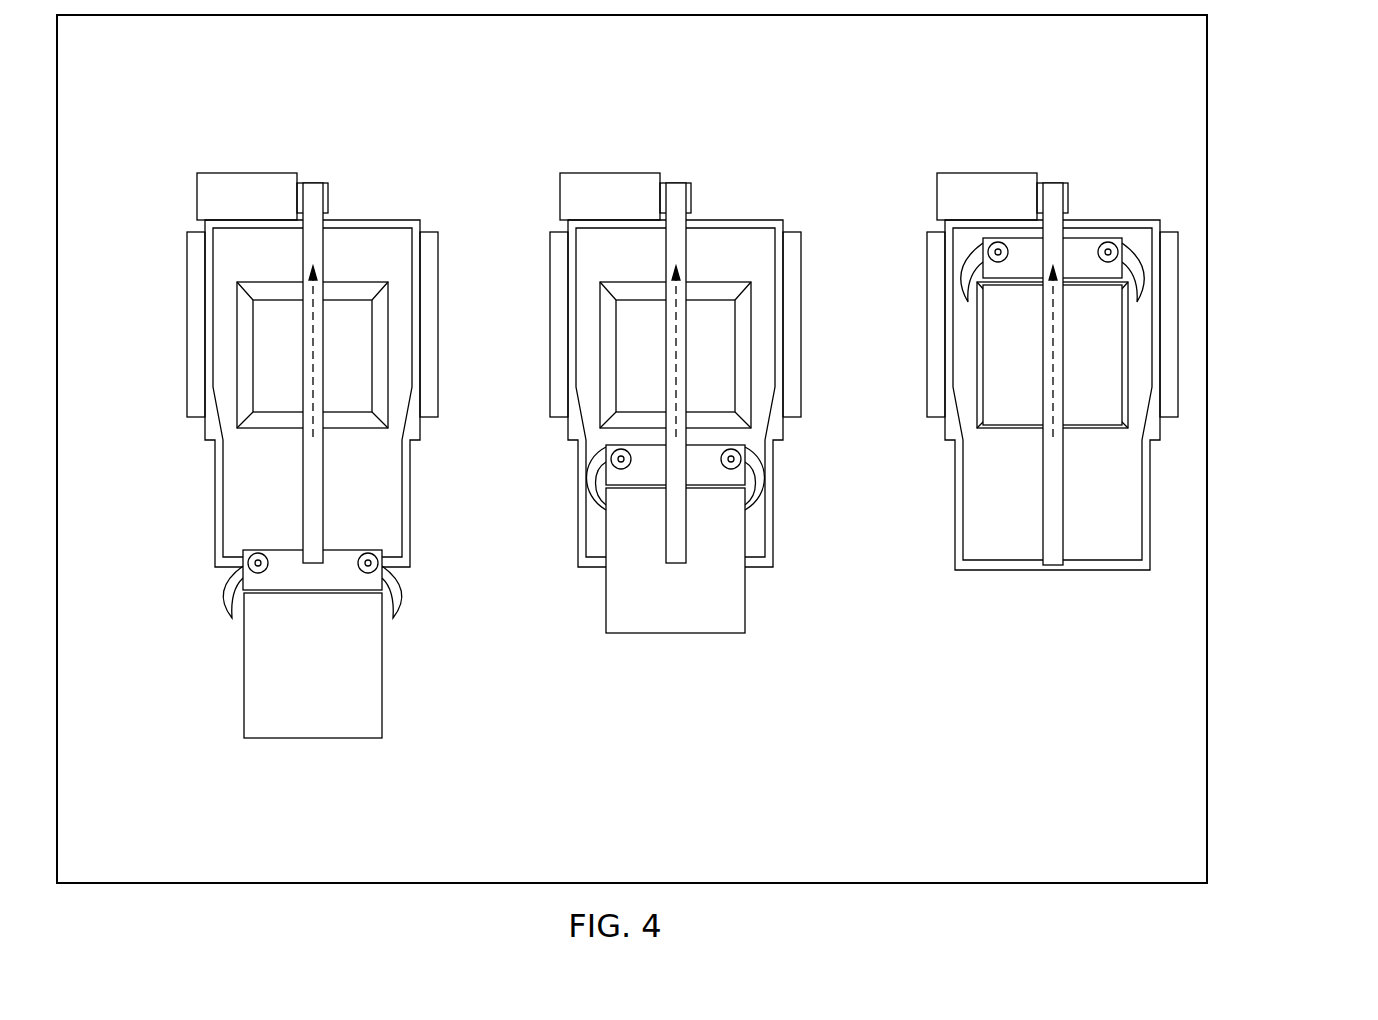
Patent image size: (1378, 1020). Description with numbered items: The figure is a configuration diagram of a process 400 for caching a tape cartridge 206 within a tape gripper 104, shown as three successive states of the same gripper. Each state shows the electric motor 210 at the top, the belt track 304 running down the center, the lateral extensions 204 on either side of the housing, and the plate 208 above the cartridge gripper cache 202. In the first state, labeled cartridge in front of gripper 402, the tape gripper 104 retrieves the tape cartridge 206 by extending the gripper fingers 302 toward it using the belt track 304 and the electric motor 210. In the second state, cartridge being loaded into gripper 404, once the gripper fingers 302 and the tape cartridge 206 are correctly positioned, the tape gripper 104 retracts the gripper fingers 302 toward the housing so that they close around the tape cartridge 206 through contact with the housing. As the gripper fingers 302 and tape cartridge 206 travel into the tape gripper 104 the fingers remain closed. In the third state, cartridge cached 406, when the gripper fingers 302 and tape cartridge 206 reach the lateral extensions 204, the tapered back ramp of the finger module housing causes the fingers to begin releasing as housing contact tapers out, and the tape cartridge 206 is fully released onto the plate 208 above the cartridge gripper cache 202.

The process 400 is at (1240, 110).
The cartridge in front of gripper step 402 is at (623, 451).
The cartridge being loaded into gripper step 404 is at (676, 654).
The cartridge cached step 406 is at (1054, 590).
The tape gripper 104 is at (420, 481).
The cartridge gripper cache 202 is at (235, 390).
The lateral extensions 204 is at (430, 235).
The tape cartridge 206 is at (252, 715).
The plate 208 is at (352, 373).
The electric motor 210 is at (257, 173).
The gripper fingers 302 is at (236, 572).
The belt track 304 is at (319, 310).